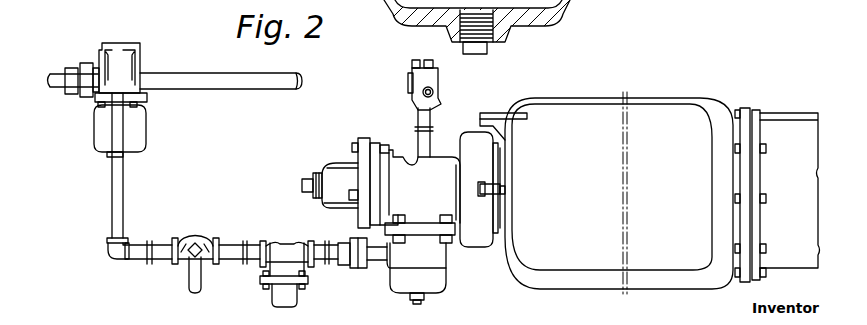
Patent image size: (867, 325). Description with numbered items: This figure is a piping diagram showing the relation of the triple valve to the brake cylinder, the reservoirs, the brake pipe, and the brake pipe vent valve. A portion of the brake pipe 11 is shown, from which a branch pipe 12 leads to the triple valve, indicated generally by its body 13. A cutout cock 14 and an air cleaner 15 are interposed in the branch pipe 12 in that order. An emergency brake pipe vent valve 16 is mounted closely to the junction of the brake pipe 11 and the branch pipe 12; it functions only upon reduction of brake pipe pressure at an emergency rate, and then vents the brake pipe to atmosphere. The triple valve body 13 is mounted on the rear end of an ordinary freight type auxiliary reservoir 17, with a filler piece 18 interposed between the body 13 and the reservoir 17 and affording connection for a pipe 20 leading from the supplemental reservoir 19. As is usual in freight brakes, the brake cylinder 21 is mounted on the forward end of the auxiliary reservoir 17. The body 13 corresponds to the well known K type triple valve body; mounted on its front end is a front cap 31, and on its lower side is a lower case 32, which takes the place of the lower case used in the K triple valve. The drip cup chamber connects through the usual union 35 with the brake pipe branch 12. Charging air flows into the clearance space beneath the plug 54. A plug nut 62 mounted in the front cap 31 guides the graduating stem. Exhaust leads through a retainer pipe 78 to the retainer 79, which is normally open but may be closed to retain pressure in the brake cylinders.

The brake pipe 11 is at (183, 76).
The branch pipe 12 is at (124, 186).
The triple valve body 13 is at (438, 170).
The cutout cock 14 is at (182, 262).
The air cleaner 15 is at (268, 290).
The emergency brake pipe vent valve 16 is at (138, 129).
The auxiliary reservoir 17 is at (513, 268).
The filler piece 18 is at (480, 207).
The supplemental reservoir 19 is at (548, 262).
The pipe 20 is at (498, 190).
The brake cylinder 21 is at (786, 125).
The front cap 31 is at (337, 162).
The lower case 32 is at (400, 284).
The union 35 is at (355, 268).
The plug 54 is at (398, 152).
The plug nut 62 is at (305, 180).
The retainer pipe 78 is at (421, 118).
The retainer 79 is at (438, 80).